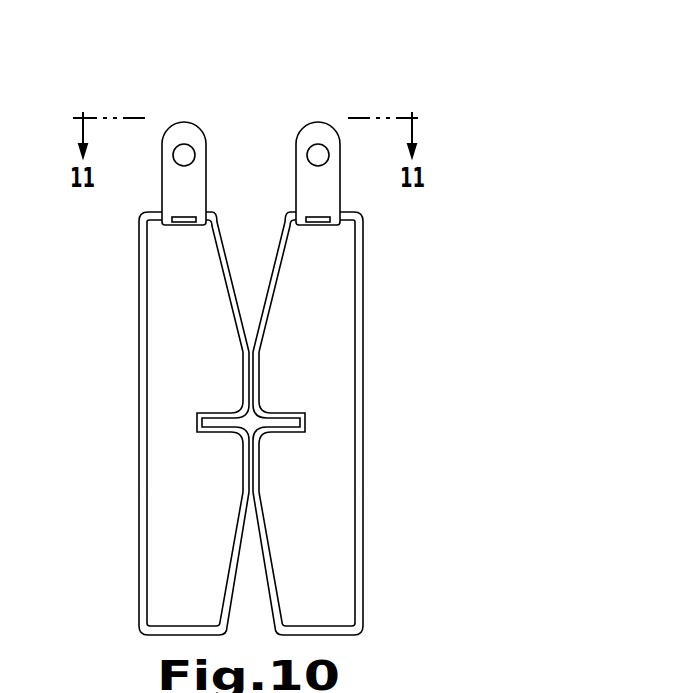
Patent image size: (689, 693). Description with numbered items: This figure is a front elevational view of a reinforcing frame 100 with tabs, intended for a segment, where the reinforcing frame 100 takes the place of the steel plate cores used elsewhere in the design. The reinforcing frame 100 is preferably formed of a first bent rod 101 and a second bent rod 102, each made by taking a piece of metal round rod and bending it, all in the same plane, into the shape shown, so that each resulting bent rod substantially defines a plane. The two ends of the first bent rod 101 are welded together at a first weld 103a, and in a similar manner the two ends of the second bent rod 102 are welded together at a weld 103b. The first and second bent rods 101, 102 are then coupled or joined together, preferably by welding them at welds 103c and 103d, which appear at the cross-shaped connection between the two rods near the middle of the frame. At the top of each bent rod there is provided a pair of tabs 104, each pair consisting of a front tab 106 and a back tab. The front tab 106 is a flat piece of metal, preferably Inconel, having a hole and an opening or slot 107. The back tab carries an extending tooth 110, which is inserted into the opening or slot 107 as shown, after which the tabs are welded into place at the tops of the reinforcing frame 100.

The reinforcing frame 100 is at (357, 397).
The first bent rod 101 is at (358, 313).
The second bent rod 102 is at (143, 355).
The first weld 103a is at (252, 378).
The weld 103b is at (213, 417).
The weld 103c is at (286, 417).
The weld 103d is at (253, 467).
The pair of tabs 104 is at (206, 103).
The front tab 106 is at (183, 135).
The opening or slot 107 is at (185, 226).
The tooth 110 is at (180, 221).